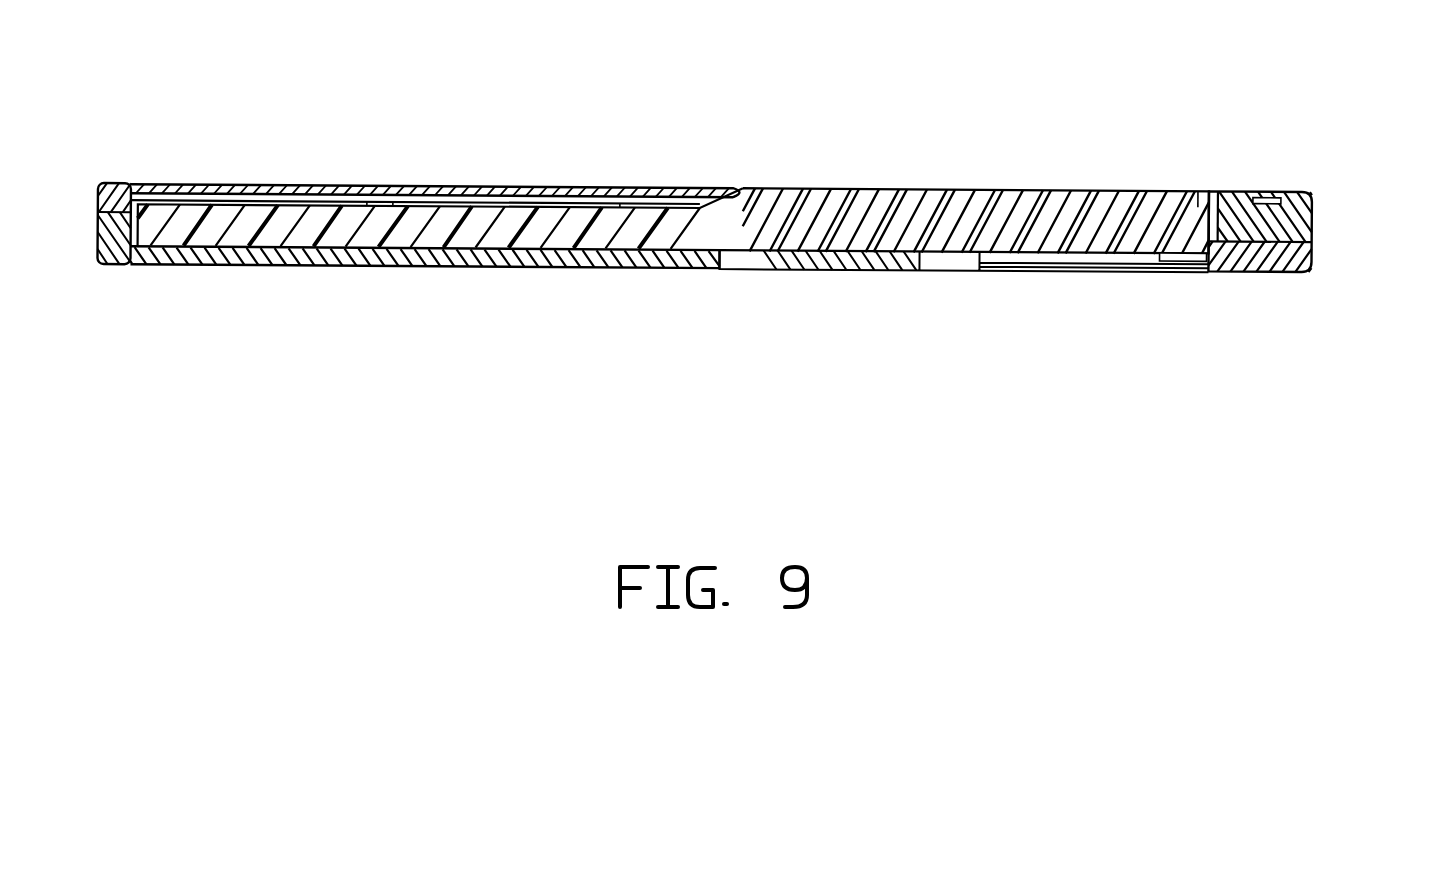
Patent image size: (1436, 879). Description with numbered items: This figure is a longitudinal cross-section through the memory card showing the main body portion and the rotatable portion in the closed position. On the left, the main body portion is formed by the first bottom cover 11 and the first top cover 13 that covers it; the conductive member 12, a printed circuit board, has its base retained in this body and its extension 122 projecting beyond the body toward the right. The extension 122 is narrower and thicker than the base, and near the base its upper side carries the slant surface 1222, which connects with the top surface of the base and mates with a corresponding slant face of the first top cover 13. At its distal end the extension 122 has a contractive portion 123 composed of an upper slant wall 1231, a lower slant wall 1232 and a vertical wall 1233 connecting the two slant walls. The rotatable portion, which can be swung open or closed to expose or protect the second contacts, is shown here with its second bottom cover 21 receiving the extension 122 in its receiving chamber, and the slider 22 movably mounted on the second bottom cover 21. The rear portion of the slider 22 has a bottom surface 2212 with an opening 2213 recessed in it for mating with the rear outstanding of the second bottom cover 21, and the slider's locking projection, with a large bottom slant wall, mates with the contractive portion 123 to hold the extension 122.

The first bottom cover 11 is at (275, 250).
The conductive member 12 is at (449, 231).
The first top cover 13 is at (124, 183).
The second bottom cover 21 is at (827, 262).
The slider 22 is at (1312, 196).
The extension 122 is at (935, 228).
The contractive portion 123 is at (1313, 250).
The slant surface 1222 is at (718, 187).
The upper slant wall 1231 is at (1201, 190).
The lower slant wall 1232 is at (1209, 264).
The vertical wall 1233 is at (1262, 272).
The bottom surface 2212 is at (1247, 193).
The opening 2213 is at (1209, 190).